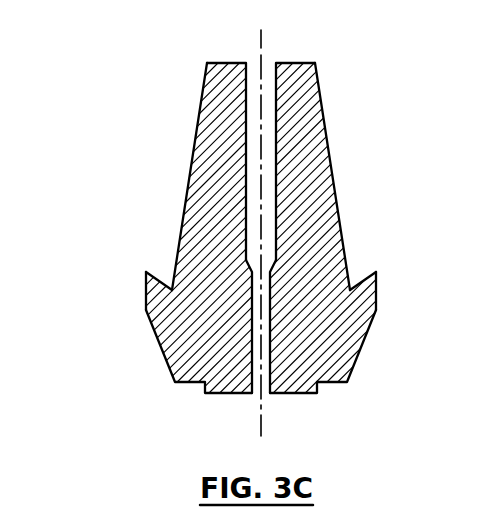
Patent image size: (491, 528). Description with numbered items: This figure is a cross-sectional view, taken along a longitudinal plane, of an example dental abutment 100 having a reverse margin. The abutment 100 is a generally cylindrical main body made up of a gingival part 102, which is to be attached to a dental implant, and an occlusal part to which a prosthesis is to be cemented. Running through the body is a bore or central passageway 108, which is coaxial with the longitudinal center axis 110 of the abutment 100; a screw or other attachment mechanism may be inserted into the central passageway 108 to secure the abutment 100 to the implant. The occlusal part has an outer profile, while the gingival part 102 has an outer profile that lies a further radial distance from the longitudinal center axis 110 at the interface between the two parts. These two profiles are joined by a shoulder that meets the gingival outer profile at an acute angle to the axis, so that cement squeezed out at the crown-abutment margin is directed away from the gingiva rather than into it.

The abutment 100 is at (119, 92).
The gingival part 102 is at (146, 342).
The central passageway 108 is at (268, 97).
The longitudinal center axis 110 is at (262, 41).